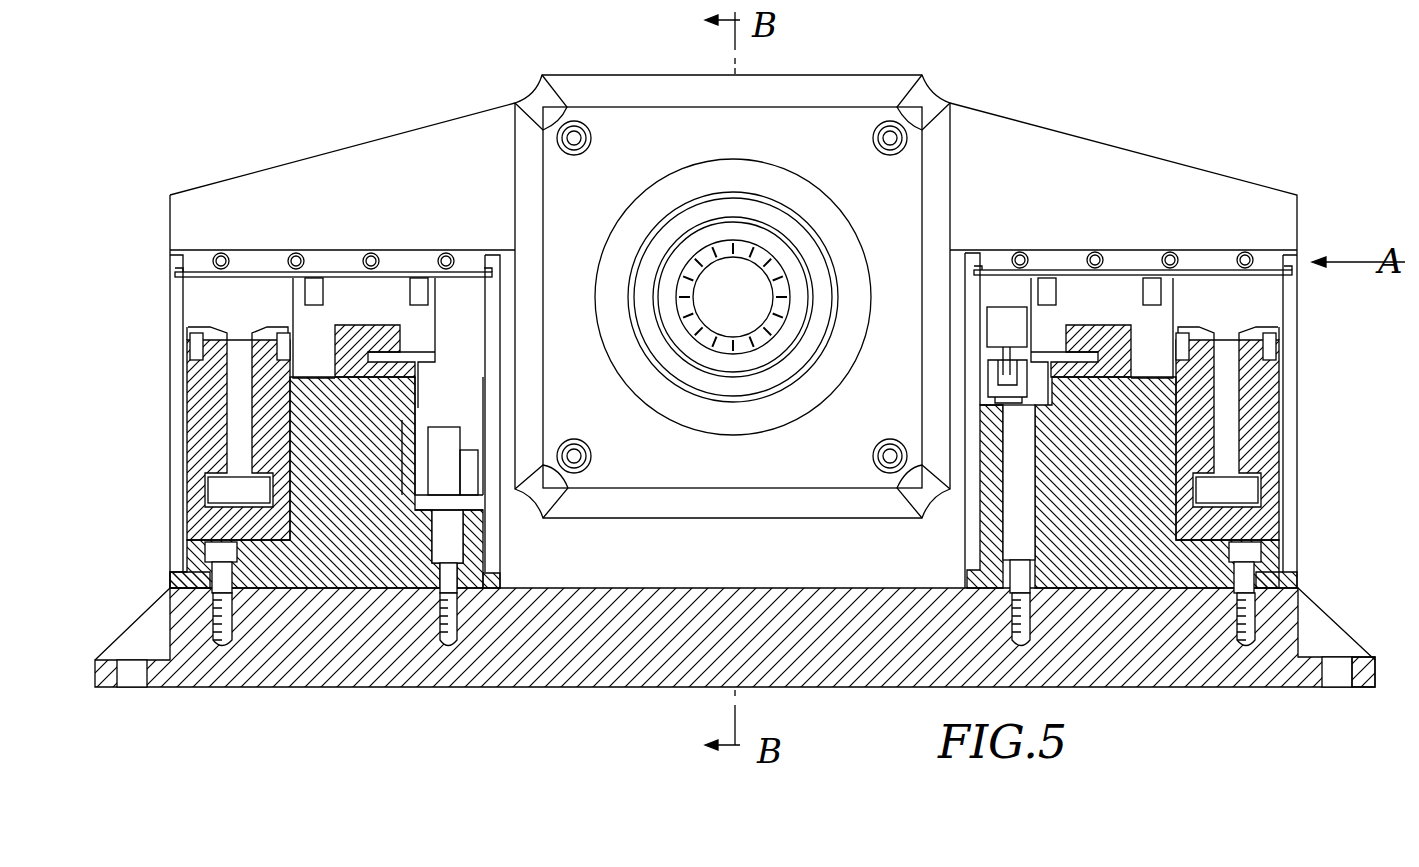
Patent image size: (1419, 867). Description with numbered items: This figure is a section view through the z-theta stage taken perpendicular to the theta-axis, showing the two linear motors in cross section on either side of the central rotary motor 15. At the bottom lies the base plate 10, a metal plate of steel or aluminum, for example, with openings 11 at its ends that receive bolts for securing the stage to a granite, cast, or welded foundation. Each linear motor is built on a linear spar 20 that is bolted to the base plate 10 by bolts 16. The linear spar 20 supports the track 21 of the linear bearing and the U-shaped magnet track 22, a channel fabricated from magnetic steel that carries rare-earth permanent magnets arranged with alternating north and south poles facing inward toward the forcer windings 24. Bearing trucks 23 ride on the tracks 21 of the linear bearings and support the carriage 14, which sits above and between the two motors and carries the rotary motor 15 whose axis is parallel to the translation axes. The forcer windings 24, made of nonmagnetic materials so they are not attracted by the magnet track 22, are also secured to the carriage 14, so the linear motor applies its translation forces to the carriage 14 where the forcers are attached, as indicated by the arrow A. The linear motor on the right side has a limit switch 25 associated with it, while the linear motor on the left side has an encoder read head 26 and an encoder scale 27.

The base plate 10 is at (541, 666).
The openings 11 is at (1340, 665).
The carriage 14 is at (977, 127).
The rotary motor 15 is at (836, 126).
The bolts 16 is at (490, 572).
The linear spar 20 is at (405, 433).
The track of the linear bearing 21 is at (1068, 323).
The magnet track 22 is at (202, 390).
The bearing trucks 23 is at (345, 298).
The forcer windings 24 is at (245, 290).
The limit switch 25 is at (988, 390).
The encoder read head 26 is at (486, 447).
The encoder scale 27 is at (437, 434).